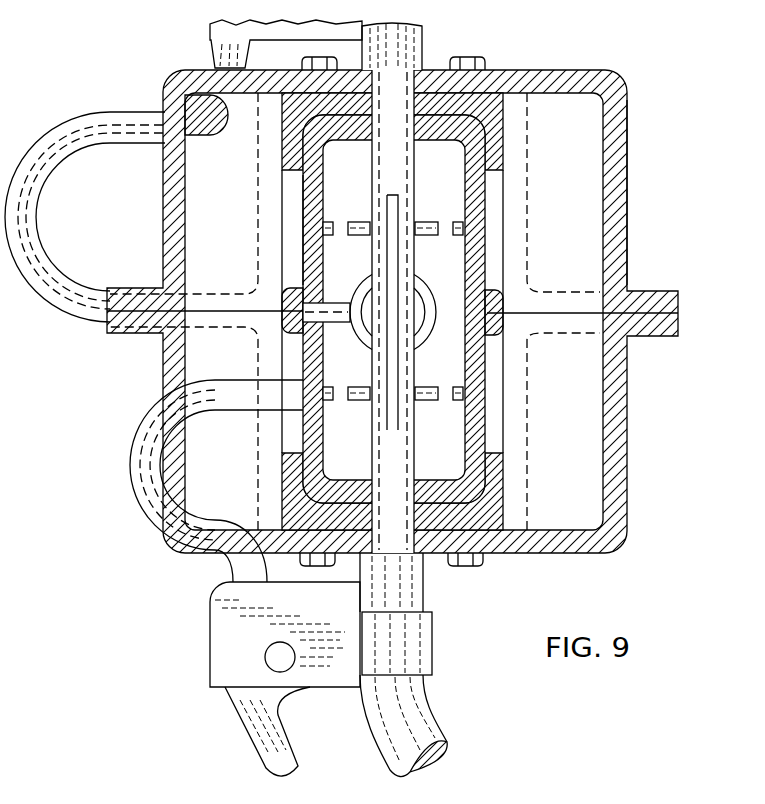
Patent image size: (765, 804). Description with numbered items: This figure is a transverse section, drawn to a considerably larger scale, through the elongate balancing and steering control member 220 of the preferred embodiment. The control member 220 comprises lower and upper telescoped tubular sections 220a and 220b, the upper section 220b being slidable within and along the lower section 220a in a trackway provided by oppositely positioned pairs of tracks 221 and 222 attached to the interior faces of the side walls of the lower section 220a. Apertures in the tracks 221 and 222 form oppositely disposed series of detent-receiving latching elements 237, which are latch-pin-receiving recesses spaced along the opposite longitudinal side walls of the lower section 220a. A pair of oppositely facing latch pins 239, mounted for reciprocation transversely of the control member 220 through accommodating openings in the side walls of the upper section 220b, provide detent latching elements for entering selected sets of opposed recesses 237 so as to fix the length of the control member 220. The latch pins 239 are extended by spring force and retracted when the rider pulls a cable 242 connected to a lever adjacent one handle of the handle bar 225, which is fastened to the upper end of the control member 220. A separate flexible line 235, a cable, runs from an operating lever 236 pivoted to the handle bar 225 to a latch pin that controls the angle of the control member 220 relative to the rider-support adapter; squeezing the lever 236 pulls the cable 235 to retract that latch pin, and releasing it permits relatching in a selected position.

The elongate balancing and steering control member 220 is at (634, 350).
The lower telescoped tubular section 220a is at (622, 195).
The upper telescoped tubular section 220b is at (308, 257).
The track 221 is at (514, 100).
The track 222 is at (512, 542).
The handle bar 225 is at (434, 569).
The flexible line 235 is at (140, 472).
The operating lever 236 is at (262, 737).
The detent-receiving latching elements 237 is at (437, 72).
The latch pins 239 is at (382, 183).
The cable 242 is at (88, 114).